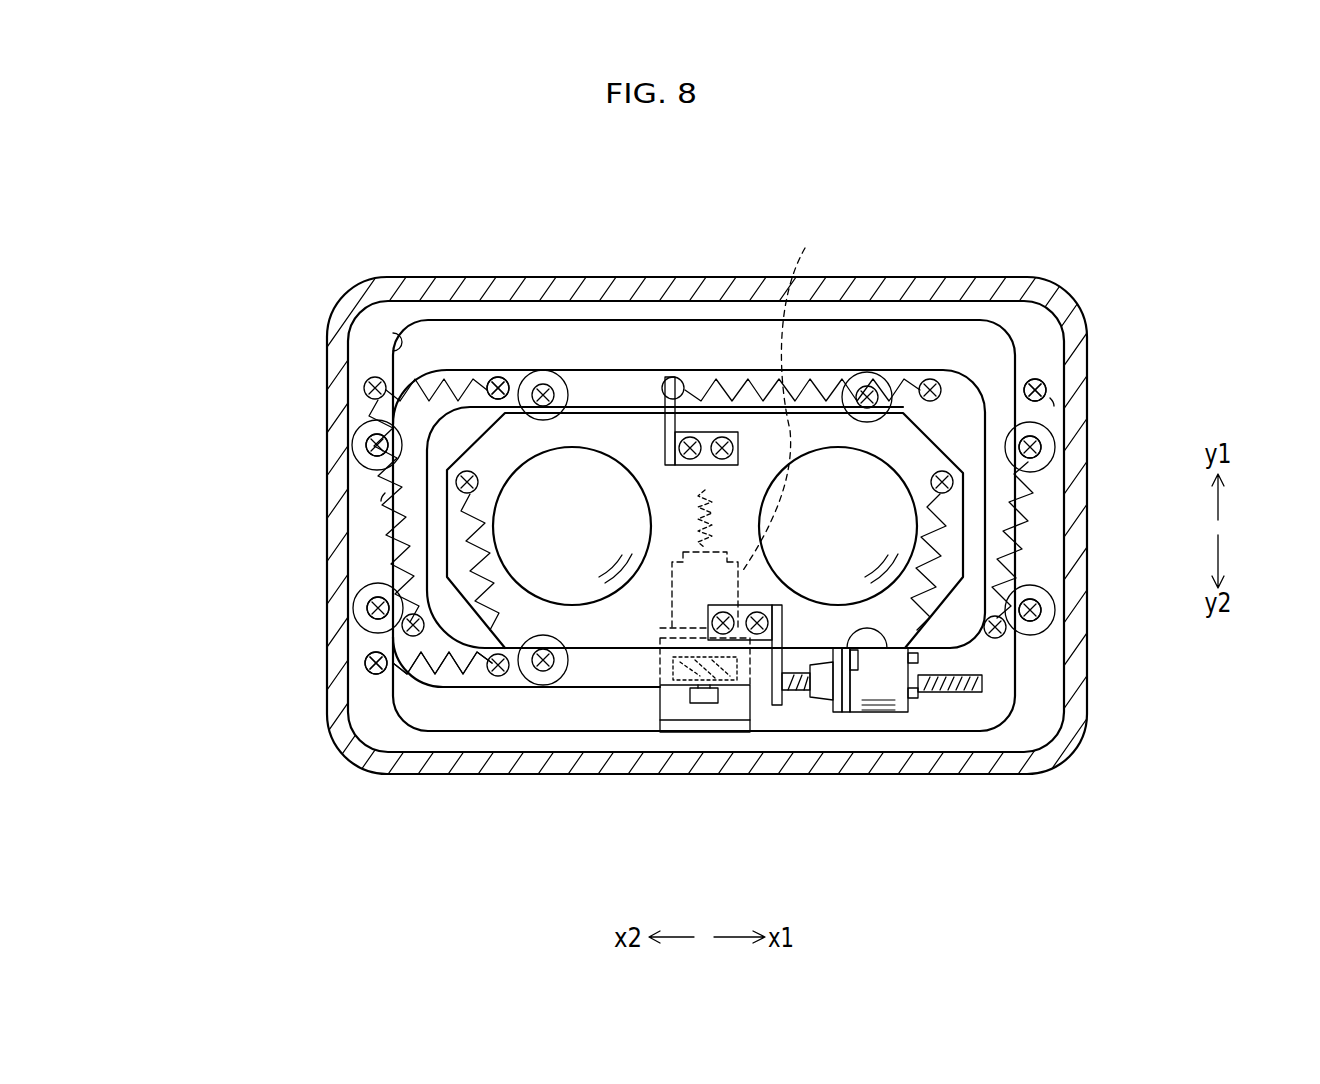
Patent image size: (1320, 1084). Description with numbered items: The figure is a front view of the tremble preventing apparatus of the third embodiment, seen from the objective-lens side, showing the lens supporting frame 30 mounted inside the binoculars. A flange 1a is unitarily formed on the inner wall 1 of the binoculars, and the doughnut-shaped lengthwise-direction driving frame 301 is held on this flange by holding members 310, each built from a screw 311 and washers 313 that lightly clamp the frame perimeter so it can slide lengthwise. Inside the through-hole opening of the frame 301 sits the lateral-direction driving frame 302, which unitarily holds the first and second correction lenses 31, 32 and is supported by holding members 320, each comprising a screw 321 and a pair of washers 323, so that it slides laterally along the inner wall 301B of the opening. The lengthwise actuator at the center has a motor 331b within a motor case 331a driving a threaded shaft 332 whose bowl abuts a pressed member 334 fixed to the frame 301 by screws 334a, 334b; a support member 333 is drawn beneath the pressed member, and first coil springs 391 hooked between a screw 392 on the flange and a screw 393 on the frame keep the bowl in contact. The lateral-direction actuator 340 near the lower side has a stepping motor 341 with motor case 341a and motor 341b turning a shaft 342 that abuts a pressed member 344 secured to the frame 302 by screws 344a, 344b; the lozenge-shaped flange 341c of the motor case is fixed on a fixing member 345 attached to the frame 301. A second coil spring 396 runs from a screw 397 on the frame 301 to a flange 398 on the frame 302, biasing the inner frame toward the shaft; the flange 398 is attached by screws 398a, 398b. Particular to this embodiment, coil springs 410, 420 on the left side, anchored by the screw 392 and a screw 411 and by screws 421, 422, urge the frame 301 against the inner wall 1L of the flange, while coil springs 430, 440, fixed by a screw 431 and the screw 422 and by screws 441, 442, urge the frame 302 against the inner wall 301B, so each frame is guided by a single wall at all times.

The inner wall 1 is at (1078, 292).
The flange 1a is at (1038, 335).
The inner wall 1L is at (394, 340).
The lens supporting frame 30 is at (623, 357).
The first correction lens 31 is at (826, 468).
The second correction lens 32 is at (580, 468).
The lengthwise-direction driving frame 301 is at (1013, 352).
The inner wall 301B is at (602, 686).
The lateral-direction driving frame 302 is at (1033, 380).
The holding member 310 is at (367, 478).
The screw 311 is at (368, 436).
The washer 313 is at (355, 443).
The holding member 320 is at (583, 383).
The screw 321 is at (544, 382).
The washer 323 is at (520, 384).
The motor case 331a is at (789, 395).
The motor 331b is at (720, 537).
The shaft 332 is at (702, 488).
The motor bracket 333 is at (675, 712).
The pressed member 334 is at (703, 700).
The screw 334a is at (716, 705).
The screw 334b is at (660, 650).
The lateral-direction actuator 340 is at (930, 693).
The stepping motor 341 is at (881, 716).
The motor case 341a is at (905, 714).
The motor 341b is at (915, 710).
The flange 341c is at (852, 714).
The shaft 342 is at (820, 702).
The pressed member 344 is at (777, 706).
The screw 344a is at (770, 622).
The screw 344b is at (706, 620).
The fixing member 345 is at (840, 714).
The first coil spring 391 is at (385, 493).
The screw 392 is at (365, 382).
The screw 393 is at (372, 673).
The second coil spring 396 is at (860, 373).
The screw 397 is at (983, 380).
The flange 398 is at (673, 378).
The bracket screw 398a is at (727, 437).
The bracket screw 398b is at (693, 437).
The coil spring 410 is at (437, 384).
The screw 411 is at (496, 380).
The coil spring 420 is at (413, 690).
The screw 421 is at (365, 668).
The screw 422 is at (428, 668).
The coil spring 430 is at (492, 619).
The screw 431 is at (478, 483).
The coil spring 440 is at (916, 613).
The screw 441 is at (931, 483).
The screw 442 is at (945, 697).